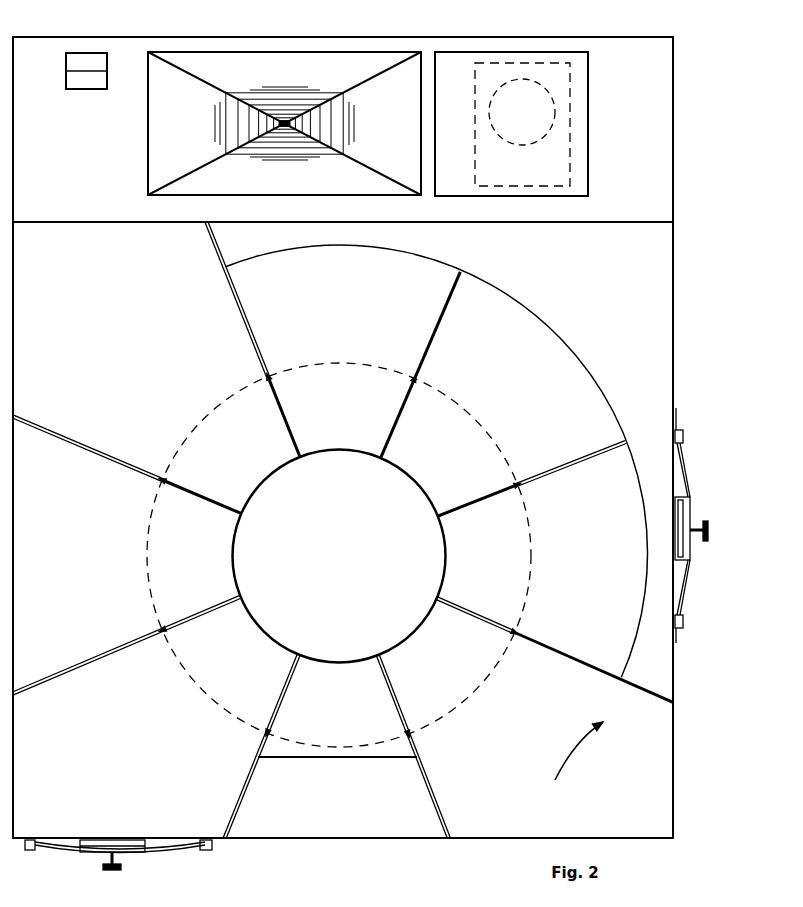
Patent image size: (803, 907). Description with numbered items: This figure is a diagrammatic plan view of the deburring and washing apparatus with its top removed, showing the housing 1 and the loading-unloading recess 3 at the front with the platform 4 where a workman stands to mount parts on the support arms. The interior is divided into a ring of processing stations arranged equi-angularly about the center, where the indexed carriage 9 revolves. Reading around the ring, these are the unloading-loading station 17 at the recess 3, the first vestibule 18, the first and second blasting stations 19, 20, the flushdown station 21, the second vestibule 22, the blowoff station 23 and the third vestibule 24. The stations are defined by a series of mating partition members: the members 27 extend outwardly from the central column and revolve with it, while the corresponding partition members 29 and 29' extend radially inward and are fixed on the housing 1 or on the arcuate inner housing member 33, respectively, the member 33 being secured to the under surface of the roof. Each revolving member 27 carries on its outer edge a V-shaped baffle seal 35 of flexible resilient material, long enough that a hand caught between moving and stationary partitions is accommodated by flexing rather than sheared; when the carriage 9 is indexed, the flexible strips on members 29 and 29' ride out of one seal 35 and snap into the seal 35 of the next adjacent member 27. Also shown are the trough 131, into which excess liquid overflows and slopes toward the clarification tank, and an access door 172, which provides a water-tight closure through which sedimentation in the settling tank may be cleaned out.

The housing 1 is at (480, 844).
The loading-unloading recess 3 is at (318, 757).
The platform 4 is at (340, 838).
The carriage 9 is at (298, 607).
The unloading-loading station 17 is at (313, 737).
The first vestibule 18 is at (406, 719).
The first blasting station 19 is at (476, 592).
The second blasting station 20 is at (418, 424).
The flushdown station 21 is at (334, 439).
The second vestibule 22 is at (201, 489).
The blowoff station 23 is at (160, 574).
The third vestibule 24 is at (225, 702).
The partition member 27 is at (278, 402).
The partition member 29 is at (307, 529).
The partition member 29' is at (530, 411).
The arcuate inner housing member 33 is at (573, 350).
The V-shaped baffle seal 35 is at (268, 376).
The trough 131 is at (630, 237).
The access door 172 is at (82, 854).